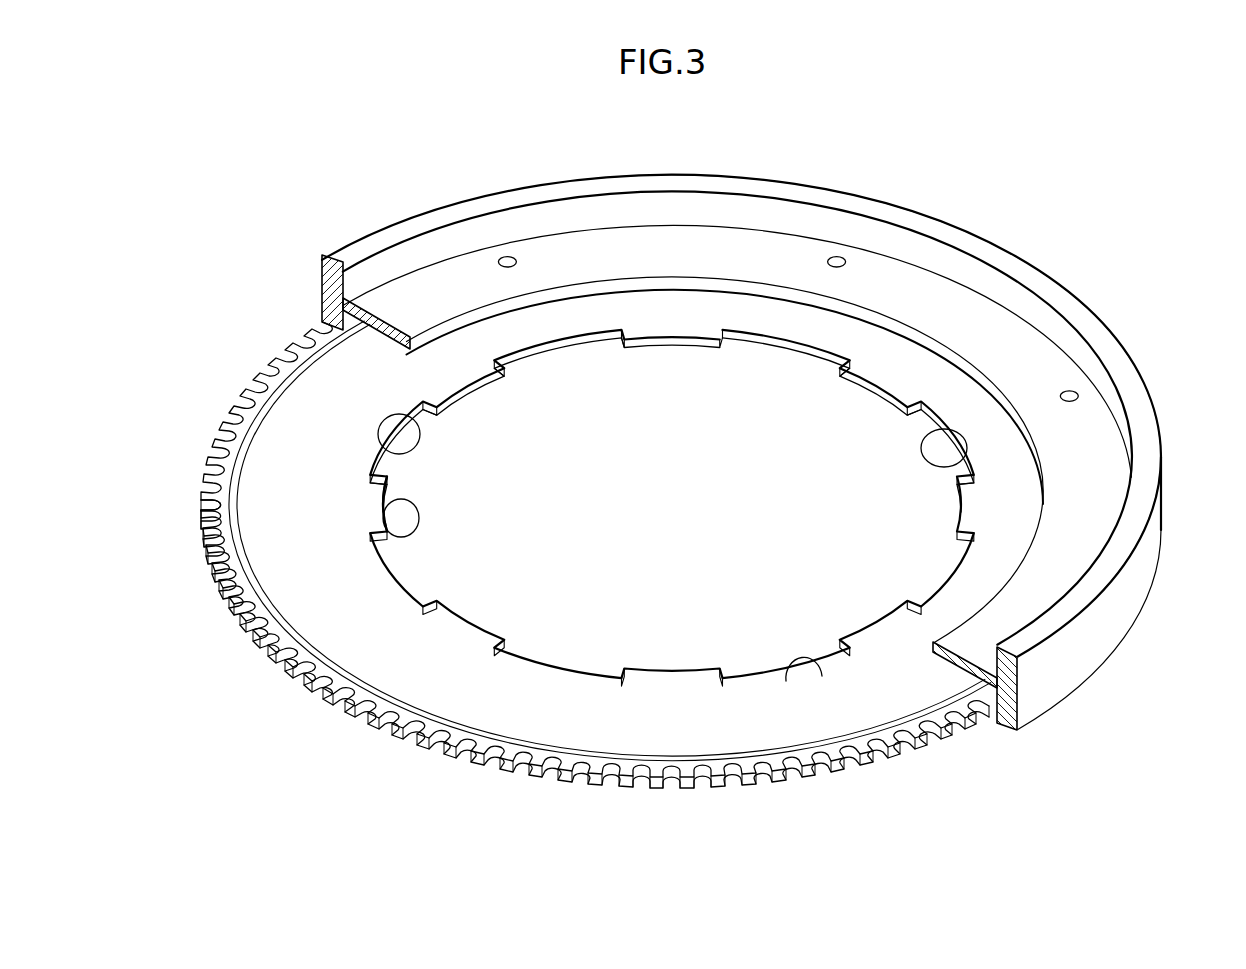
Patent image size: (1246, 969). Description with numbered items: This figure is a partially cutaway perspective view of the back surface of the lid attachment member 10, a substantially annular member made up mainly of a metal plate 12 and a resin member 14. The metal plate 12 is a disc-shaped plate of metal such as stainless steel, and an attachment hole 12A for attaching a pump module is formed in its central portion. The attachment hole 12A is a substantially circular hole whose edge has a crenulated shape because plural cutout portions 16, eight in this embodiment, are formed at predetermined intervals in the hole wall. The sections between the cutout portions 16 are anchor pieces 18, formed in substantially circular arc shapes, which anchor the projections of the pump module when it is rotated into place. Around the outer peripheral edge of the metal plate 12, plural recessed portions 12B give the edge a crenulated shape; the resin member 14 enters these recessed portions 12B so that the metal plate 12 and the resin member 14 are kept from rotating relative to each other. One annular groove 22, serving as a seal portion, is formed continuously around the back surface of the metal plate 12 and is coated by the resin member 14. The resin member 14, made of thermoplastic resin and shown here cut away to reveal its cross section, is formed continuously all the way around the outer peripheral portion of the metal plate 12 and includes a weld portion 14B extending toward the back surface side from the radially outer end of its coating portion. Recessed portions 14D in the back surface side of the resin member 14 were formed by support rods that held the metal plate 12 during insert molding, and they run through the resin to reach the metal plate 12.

The lid attachment member 10 is at (1056, 212).
The metal plate 12 is at (598, 790).
The attachment hole 12A is at (412, 523).
The recessed portions 12B is at (701, 788).
The resin member 14 is at (760, 174).
The weld portion 14B is at (806, 186).
The recessed portions 14D is at (832, 248).
The cutout portions 16 is at (398, 440).
The anchor pieces 18 is at (685, 350).
The annular groove 22 is at (390, 727).